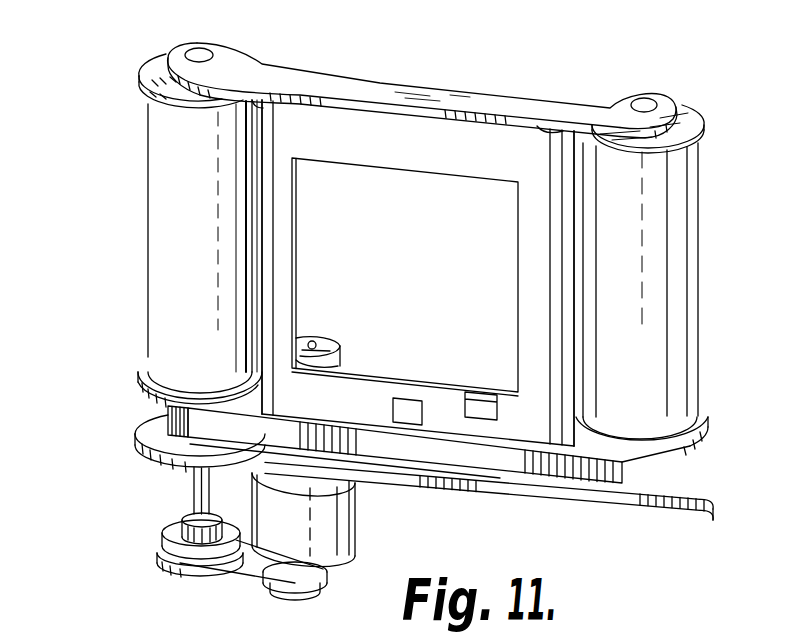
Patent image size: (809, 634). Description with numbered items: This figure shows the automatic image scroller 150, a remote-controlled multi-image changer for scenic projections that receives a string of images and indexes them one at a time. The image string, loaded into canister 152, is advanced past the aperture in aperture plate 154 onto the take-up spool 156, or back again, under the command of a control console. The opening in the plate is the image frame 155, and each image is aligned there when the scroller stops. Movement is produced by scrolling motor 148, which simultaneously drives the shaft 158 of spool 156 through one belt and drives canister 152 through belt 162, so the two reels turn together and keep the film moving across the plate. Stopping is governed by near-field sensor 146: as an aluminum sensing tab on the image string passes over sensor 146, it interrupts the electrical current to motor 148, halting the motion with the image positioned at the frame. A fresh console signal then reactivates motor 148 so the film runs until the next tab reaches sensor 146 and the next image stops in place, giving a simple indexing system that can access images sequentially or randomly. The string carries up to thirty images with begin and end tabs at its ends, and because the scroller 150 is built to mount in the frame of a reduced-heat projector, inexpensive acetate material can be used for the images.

The near-field sensor 146 is at (405, 425).
The scrolling motor 148 is at (333, 533).
The automatic image scroller 150 is at (350, 76).
The canister 152 is at (694, 113).
The aperture plate 154 is at (480, 137).
The image frame 155 is at (357, 173).
The spool 156 is at (167, 182).
The shaft 158 is at (188, 492).
The belt 162 is at (587, 500).